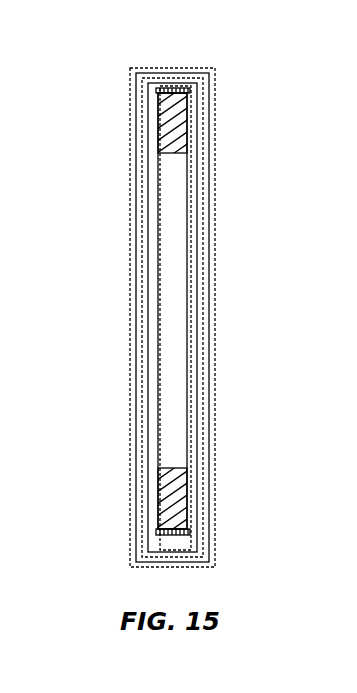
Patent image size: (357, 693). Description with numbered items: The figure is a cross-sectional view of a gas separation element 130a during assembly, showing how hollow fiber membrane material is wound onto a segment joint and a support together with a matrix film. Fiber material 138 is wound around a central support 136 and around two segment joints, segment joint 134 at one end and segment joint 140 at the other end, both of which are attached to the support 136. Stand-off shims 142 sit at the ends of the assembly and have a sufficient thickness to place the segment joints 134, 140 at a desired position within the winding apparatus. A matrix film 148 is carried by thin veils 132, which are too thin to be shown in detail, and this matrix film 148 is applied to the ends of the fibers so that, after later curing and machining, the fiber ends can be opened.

The gas separation element 130a is at (137, 48).
The veils 132 is at (201, 147).
The segment joint 134 is at (170, 122).
The support 136 is at (171, 305).
The fiber material 138 is at (197, 205).
The segment joint 140 is at (170, 507).
The stand-off shims 142 is at (191, 89).
The matrix film 148 is at (201, 128).